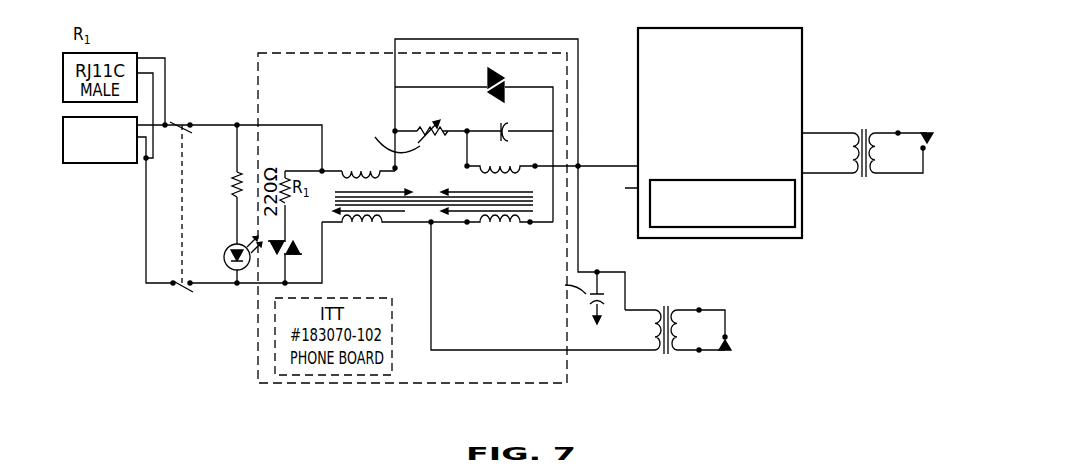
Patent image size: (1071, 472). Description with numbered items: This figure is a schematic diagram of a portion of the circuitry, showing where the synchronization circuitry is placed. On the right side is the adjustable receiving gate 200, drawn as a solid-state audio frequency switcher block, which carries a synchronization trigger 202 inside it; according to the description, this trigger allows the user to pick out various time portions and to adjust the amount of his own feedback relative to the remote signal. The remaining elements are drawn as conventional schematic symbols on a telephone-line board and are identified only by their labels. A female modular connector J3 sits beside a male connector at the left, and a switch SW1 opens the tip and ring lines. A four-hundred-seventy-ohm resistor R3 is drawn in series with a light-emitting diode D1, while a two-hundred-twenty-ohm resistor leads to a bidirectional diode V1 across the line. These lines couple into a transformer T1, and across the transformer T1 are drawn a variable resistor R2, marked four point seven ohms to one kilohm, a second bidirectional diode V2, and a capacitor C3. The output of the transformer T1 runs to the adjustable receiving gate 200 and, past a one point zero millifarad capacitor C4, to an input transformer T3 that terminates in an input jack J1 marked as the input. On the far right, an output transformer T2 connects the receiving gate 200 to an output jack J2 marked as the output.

The adjustable receiving gate 200 is at (793, 54).
The synchronization trigger 202 is at (787, 212).
The RJ11C female connector J3 is at (100, 157).
The tip/ring switch SW1 is at (166, 205).
The 470 ohm resistor R3 is at (235, 179).
The light emitting diode D1 is at (234, 249).
The bidirectional diode V1 is at (290, 234).
The bidirectional diode V2 is at (484, 78).
The variable resistor 4.7 ohm to 1 kohm R2 is at (399, 108).
The capacitor C3 is at (516, 119).
The transformer T1 is at (480, 192).
The 1.0 mF capacitor C4 is at (558, 302).
The input transformer T3 is at (653, 330).
The input jack J1 is at (715, 343).
The output transformer T2 is at (854, 153).
The output jack J2 is at (907, 142).